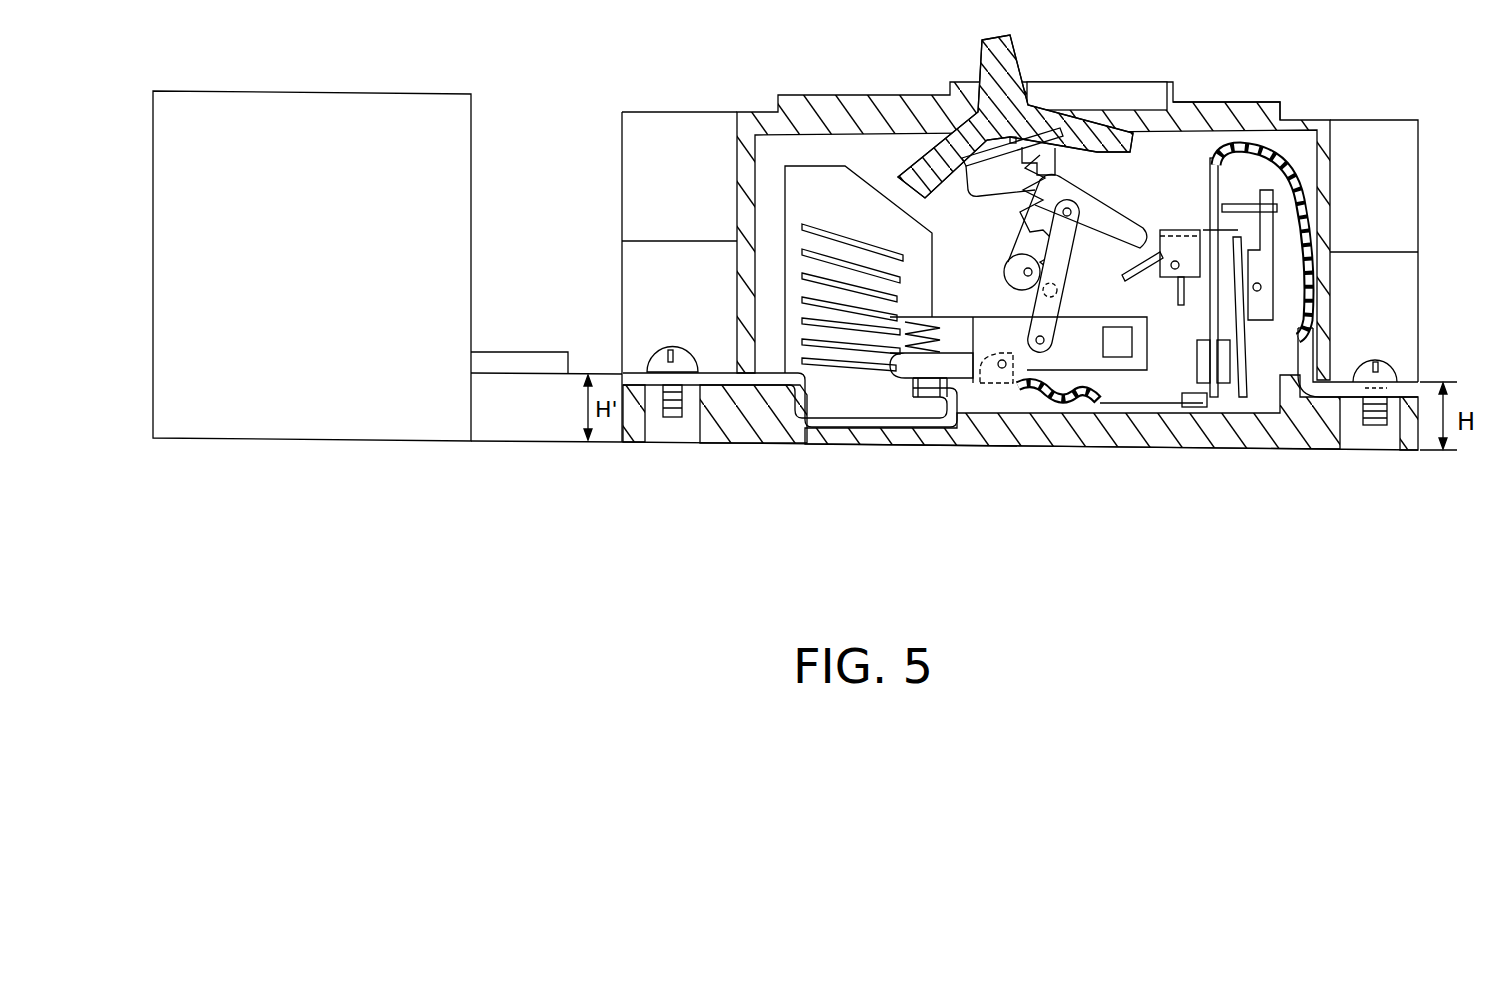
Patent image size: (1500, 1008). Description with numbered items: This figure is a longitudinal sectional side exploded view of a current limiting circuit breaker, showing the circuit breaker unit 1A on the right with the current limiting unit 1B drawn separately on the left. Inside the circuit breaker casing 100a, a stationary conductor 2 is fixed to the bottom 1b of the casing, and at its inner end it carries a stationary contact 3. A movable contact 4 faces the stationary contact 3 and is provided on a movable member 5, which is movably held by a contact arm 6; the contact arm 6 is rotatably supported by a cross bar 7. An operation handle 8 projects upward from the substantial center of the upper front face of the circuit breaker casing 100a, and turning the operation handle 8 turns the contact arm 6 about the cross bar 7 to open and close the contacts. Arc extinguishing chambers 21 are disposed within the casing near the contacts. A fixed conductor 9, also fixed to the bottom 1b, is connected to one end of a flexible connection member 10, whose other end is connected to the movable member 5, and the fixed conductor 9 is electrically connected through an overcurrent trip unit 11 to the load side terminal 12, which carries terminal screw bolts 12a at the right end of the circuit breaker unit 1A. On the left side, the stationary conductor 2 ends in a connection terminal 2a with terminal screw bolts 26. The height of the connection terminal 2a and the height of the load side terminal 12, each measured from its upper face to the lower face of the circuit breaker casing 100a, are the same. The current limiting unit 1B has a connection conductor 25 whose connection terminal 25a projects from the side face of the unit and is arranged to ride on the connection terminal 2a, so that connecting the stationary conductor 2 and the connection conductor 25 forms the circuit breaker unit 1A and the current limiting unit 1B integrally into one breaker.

The circuit breaker unit 1A is at (1210, 103).
The current limiting unit 1B is at (283, 440).
The bottom 1b is at (1260, 443).
The stationary conductor 2 is at (762, 378).
The connection terminal 2a is at (653, 380).
The stationary contact 3 is at (923, 390).
The movable contact 4 is at (947, 395).
The movable member 5 is at (960, 367).
The contact arm 6 is at (1095, 360).
The cross bar 7 is at (1187, 408).
The operation handle 8 is at (1007, 72).
The conductor 9 is at (1127, 352).
The flexible connection member 10 is at (1040, 400).
The overcurrent trip unit 11 is at (1200, 243).
The load side terminal 12 is at (1360, 388).
The terminal screw bolt 12a is at (1387, 372).
The arc extinguishing chamber 21 is at (857, 253).
The connection conductor 25 is at (498, 352).
The connection terminal 25a is at (533, 363).
The terminal screw bolt 26 is at (658, 362).
The circuit breaker casing 100a is at (1273, 100).